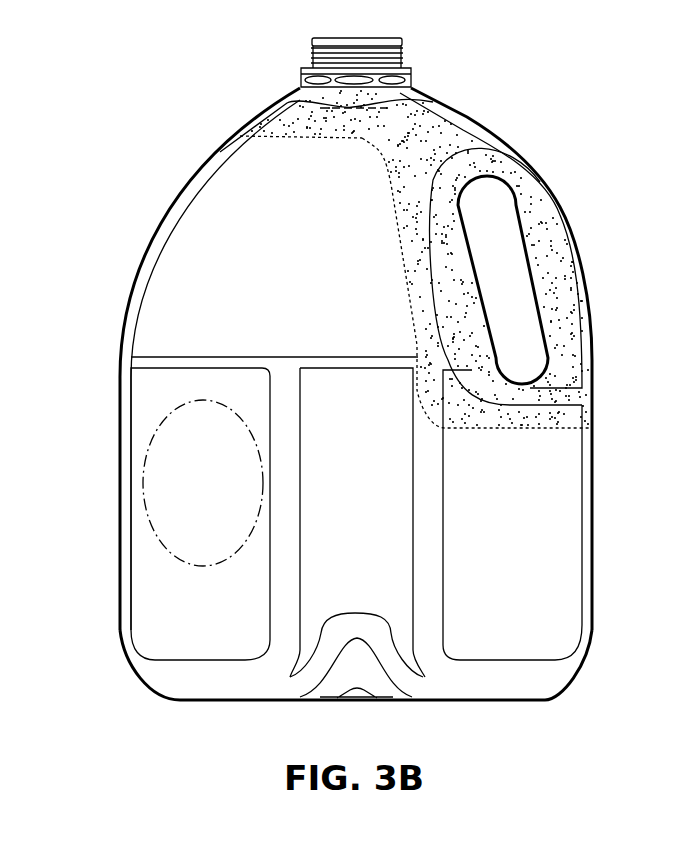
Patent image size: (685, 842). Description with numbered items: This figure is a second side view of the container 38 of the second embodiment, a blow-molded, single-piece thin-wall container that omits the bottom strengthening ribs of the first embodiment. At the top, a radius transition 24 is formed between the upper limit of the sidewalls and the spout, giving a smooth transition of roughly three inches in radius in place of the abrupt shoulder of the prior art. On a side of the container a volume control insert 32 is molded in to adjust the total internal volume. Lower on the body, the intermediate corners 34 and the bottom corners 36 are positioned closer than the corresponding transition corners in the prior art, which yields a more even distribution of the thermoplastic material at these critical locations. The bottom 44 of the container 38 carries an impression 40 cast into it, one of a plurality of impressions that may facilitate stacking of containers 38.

The radius transition 24 is at (197, 172).
The volume control insert 32 is at (150, 490).
The intermediate corner 34 is at (593, 640).
The bottom corner 36 is at (563, 688).
The container 38 is at (558, 111).
The impression 40 is at (357, 688).
The bottom 44 is at (181, 702).